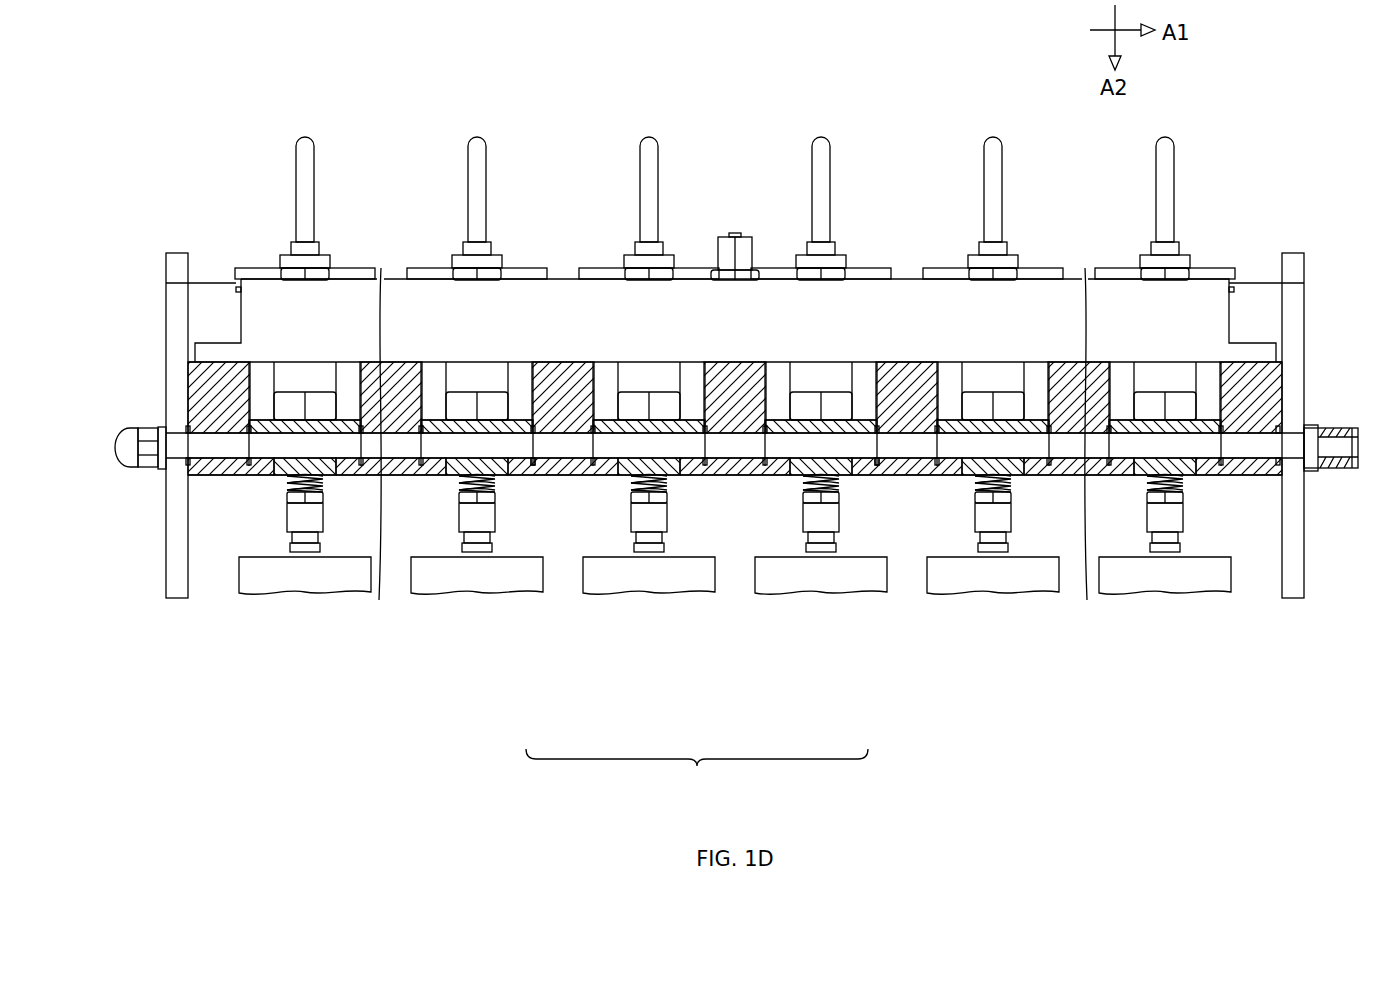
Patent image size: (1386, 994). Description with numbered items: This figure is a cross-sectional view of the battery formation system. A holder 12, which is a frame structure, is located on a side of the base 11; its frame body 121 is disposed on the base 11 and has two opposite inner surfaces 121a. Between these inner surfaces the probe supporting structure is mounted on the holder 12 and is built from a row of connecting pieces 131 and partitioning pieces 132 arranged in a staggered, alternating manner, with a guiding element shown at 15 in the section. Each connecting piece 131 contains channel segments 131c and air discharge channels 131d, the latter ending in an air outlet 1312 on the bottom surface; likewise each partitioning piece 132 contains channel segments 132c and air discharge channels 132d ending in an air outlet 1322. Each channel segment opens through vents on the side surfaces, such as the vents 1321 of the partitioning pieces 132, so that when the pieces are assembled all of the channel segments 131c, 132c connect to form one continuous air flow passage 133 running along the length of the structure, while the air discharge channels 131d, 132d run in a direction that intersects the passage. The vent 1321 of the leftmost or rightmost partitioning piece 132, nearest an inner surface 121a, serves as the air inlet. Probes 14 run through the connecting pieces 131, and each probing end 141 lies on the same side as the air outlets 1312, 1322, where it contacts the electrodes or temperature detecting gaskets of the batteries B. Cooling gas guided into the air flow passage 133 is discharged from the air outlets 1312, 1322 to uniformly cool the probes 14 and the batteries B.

The base 11 is at (166, 527).
The holder 12 is at (167, 288).
The frame body 121 is at (175, 317).
The inner surfaces 121a is at (228, 316).
The connecting pieces 131 is at (628, 415).
The channel segments 131c is at (647, 548).
The air discharge channels 131d is at (782, 462).
The air outlet 1312 is at (791, 472).
The partitioning pieces 132 is at (218, 398).
The channel segments 132c is at (577, 443).
The air discharge channels 132d is at (557, 462).
The vents 1321 is at (188, 447).
The air outlet 1322 is at (566, 472).
The air flow passage 133 is at (697, 771).
The probes 14 is at (665, 272).
The probing end 141 is at (669, 447).
The positioning pin 15 is at (594, 362).
The batteries to be formed B is at (618, 573).